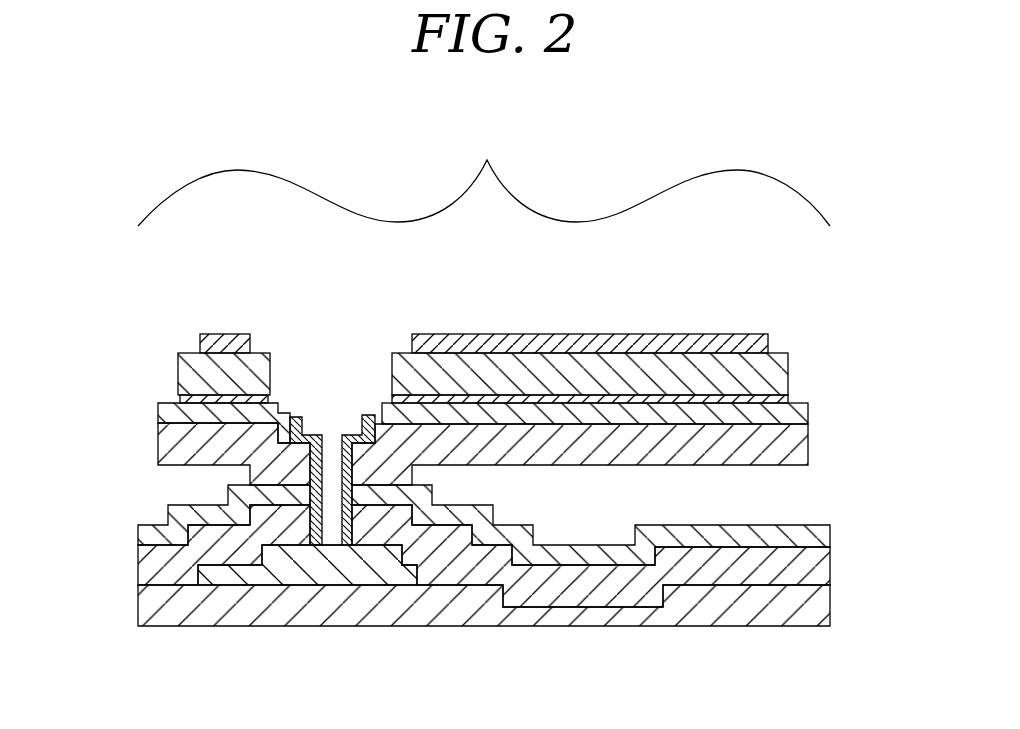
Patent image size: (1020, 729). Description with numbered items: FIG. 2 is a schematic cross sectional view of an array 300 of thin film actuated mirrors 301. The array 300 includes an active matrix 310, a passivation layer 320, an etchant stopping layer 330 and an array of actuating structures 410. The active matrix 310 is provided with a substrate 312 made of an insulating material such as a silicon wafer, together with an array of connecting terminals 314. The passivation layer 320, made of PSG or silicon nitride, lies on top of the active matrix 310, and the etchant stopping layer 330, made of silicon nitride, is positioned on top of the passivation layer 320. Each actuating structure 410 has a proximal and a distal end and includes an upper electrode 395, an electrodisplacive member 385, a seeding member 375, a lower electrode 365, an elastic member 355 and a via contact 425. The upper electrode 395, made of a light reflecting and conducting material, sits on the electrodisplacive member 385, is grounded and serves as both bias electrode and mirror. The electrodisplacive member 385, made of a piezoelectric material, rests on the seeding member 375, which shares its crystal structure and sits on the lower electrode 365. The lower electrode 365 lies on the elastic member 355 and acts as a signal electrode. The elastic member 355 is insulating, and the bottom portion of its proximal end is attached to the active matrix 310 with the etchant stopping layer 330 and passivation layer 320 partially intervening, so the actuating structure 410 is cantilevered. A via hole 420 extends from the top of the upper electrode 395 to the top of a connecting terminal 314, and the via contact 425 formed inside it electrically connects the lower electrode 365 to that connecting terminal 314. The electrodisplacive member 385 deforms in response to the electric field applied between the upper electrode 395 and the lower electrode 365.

The array of thin film actuated mirrors 300 is at (684, 110).
The thin film actuated mirror 301 is at (484, 174).
The active matrix 310 is at (128, 545).
The substrate 312 is at (808, 612).
The connecting terminal 314 is at (320, 565).
The passivation layer 320 is at (808, 572).
The etchant stopping layer 330 is at (808, 533).
The elastic member 355 is at (790, 442).
The lower electrode 365 is at (790, 413).
The seeding member 375 is at (786, 400).
The electrodisplacive member 385 is at (778, 375).
The upper electrode 395 is at (775, 340).
The actuating structure 410 is at (125, 335).
The via hole 420 is at (332, 388).
The via contact 425 is at (293, 412).